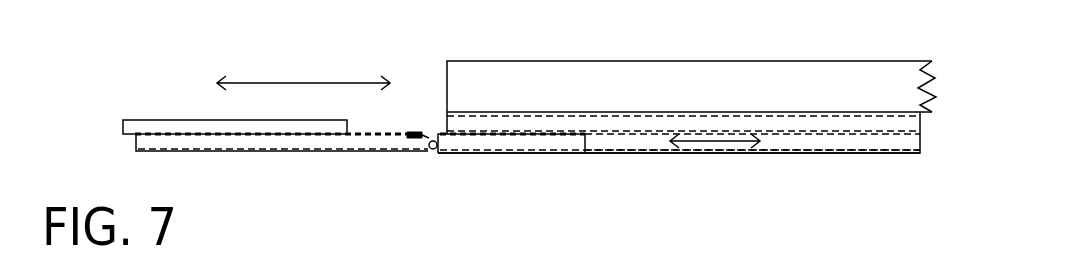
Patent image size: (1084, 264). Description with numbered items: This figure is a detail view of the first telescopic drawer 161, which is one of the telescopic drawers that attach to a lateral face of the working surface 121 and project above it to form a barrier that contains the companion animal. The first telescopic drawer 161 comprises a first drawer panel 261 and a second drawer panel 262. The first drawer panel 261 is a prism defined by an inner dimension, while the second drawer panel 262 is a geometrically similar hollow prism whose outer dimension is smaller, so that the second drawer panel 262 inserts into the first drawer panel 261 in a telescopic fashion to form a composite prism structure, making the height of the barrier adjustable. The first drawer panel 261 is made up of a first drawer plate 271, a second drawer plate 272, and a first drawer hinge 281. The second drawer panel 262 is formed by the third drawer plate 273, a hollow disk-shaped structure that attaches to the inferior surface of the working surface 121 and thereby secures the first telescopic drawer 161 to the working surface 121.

The working surface 121 is at (687, 76).
The first telescopic drawer 161 is at (157, 118).
The first drawer panel 261 is at (353, 152).
The second drawer panel 262 is at (587, 154).
The first drawer plate 271 is at (224, 138).
The second drawer plate 272 is at (530, 140).
The third drawer plate 273 is at (912, 155).
The first drawer hinge 281 is at (434, 149).